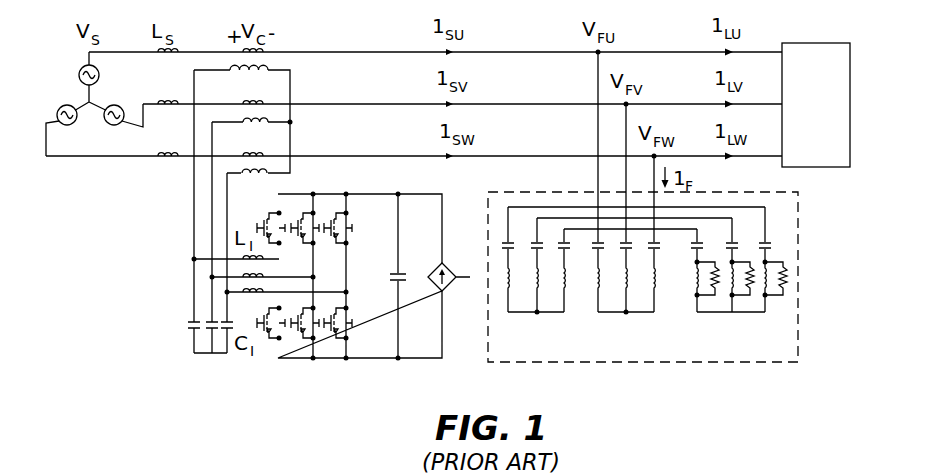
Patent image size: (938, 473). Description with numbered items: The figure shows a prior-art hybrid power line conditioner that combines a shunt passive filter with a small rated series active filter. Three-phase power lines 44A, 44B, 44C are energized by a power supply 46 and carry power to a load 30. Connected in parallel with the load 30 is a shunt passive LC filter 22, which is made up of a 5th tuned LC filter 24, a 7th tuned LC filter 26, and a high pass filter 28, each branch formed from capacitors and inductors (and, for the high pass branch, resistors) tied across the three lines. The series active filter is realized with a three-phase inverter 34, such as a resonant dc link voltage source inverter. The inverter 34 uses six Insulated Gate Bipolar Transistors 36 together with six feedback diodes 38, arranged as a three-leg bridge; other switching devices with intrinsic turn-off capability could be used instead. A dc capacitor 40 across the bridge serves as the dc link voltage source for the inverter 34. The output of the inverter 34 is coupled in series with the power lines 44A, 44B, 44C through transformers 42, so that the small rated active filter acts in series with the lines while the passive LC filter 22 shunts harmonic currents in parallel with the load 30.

The shunt passive LC filter 22 is at (502, 345).
The 5th tuned LC filter 24 is at (580, 311).
The 7th tuned LC filter 26 is at (662, 311).
The high pass filter 28 is at (792, 293).
The load 30 is at (822, 167).
The three-phase inverter 34 is at (370, 194).
The Insulated Gate Bipolar Transistors 36 is at (346, 212).
The feedback diodes 38 is at (352, 245).
The dc capacitor 40 is at (400, 272).
The transformers 42 is at (252, 101).
The three-phase power line 44A is at (342, 52).
The three-phase power line 44B is at (342, 104).
The three-phase power line 44C is at (343, 156).
The power supply 46 is at (70, 83).